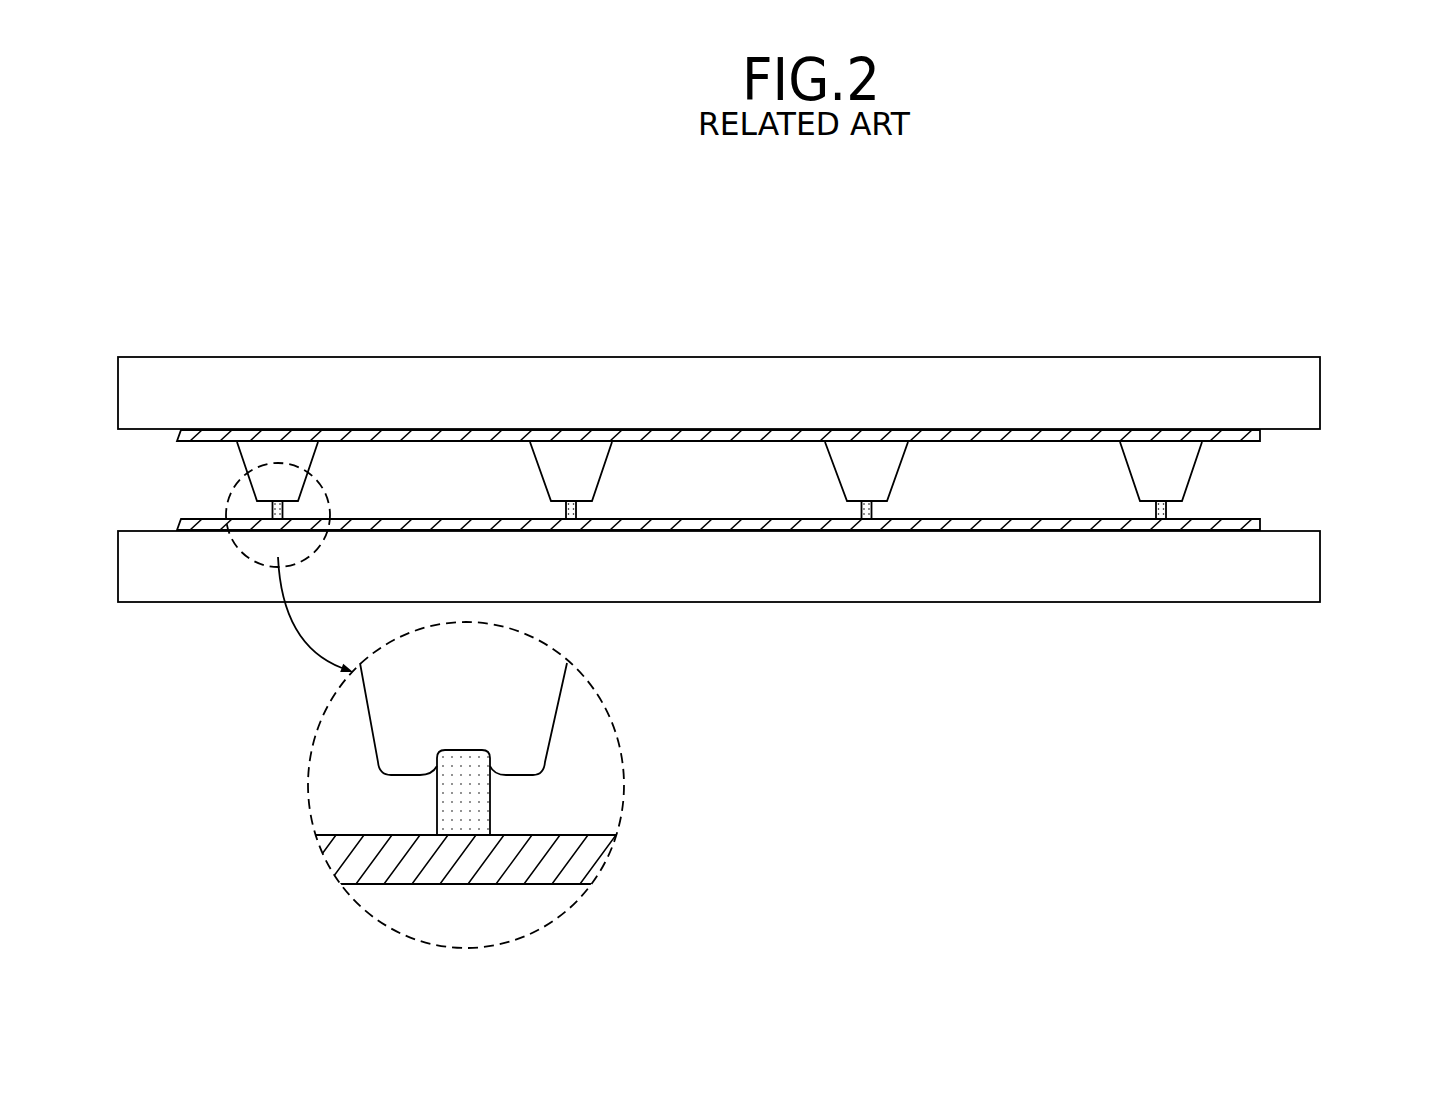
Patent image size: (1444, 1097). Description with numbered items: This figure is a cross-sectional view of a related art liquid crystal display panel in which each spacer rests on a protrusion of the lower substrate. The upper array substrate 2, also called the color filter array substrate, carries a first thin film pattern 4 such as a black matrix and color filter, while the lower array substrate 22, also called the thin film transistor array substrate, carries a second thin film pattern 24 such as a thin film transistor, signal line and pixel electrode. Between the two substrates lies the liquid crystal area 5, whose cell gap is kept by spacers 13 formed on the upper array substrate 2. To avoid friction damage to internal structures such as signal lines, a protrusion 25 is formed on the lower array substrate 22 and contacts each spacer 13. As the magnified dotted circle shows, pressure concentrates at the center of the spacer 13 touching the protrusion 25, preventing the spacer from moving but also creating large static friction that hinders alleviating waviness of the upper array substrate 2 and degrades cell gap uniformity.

The upper array substrate 2 is at (1337, 345).
The first thin film pattern 4 is at (1260, 433).
The liquid crystal area 5 is at (743, 477).
The spacer 13 is at (570, 477).
The lower array substrate 22 is at (1347, 562).
The second thin film pattern 24 is at (1162, 527).
The protrusion 25 is at (872, 521).